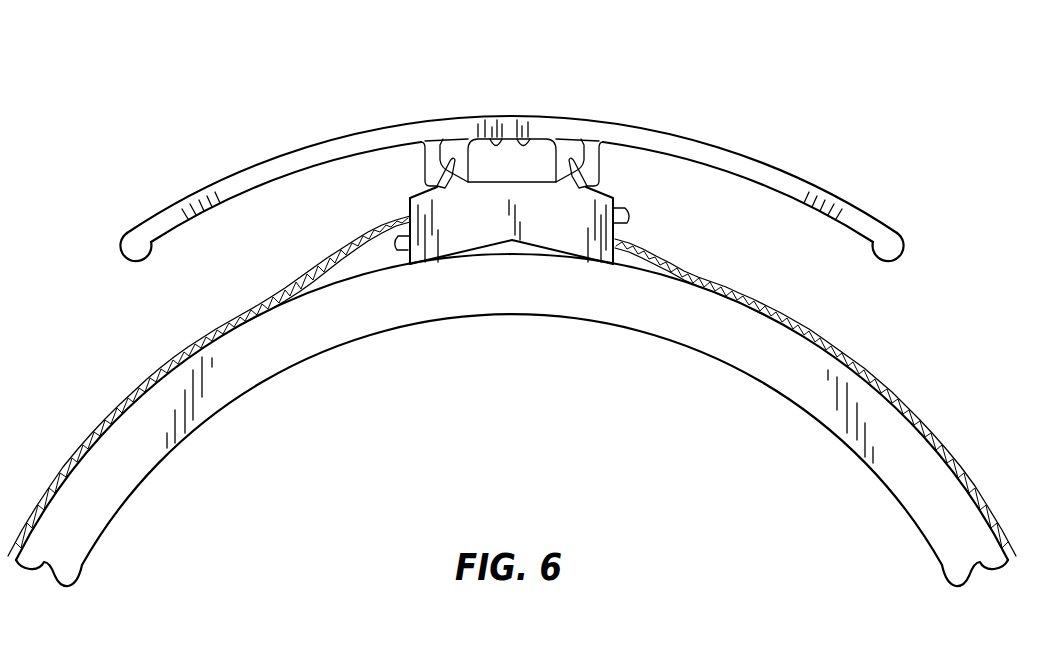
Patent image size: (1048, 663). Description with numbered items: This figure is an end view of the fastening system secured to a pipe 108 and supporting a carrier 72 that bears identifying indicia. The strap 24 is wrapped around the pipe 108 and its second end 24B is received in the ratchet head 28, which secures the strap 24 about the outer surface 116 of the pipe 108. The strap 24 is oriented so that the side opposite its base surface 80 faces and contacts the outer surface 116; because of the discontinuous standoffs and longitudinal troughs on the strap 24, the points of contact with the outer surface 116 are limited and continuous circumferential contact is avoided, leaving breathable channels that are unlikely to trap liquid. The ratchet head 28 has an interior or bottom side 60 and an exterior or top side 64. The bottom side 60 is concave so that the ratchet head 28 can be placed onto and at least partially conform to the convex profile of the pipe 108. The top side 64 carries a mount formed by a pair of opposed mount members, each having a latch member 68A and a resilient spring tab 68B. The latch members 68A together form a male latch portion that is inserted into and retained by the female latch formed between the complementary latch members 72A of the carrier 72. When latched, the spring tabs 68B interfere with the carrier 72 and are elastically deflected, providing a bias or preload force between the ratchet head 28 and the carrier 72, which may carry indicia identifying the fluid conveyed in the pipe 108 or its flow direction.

The strap 24 is at (185, 357).
The pipe 108 is at (122, 476).
The base surface 80 is at (116, 398).
The outer surface 116 is at (345, 283).
The carrier 72 is at (277, 166).
The latch member 72A is at (437, 186).
The latch member 68A is at (437, 168).
The resilient spring tab 68B is at (511, 136).
The top side 64 is at (537, 157).
The ratchet head 28 is at (548, 218).
The bottom side 60 is at (476, 253).
The second end 24B is at (627, 217).